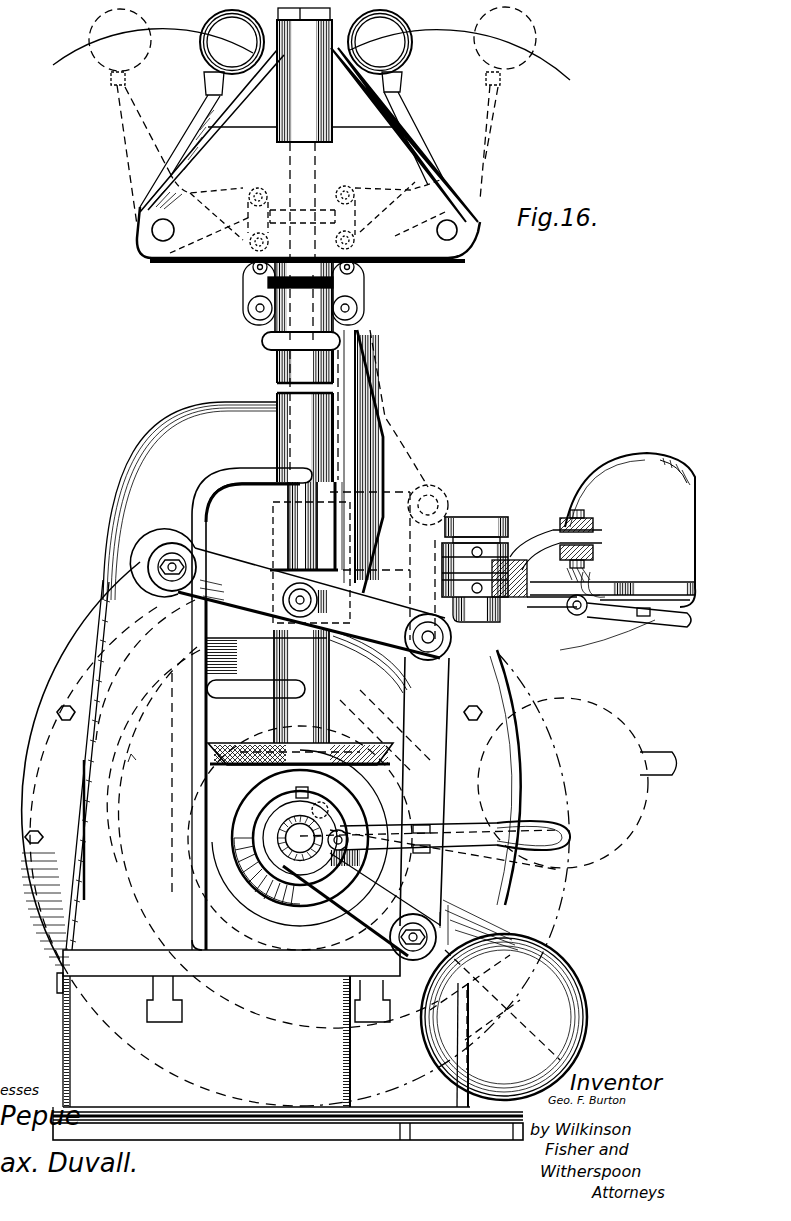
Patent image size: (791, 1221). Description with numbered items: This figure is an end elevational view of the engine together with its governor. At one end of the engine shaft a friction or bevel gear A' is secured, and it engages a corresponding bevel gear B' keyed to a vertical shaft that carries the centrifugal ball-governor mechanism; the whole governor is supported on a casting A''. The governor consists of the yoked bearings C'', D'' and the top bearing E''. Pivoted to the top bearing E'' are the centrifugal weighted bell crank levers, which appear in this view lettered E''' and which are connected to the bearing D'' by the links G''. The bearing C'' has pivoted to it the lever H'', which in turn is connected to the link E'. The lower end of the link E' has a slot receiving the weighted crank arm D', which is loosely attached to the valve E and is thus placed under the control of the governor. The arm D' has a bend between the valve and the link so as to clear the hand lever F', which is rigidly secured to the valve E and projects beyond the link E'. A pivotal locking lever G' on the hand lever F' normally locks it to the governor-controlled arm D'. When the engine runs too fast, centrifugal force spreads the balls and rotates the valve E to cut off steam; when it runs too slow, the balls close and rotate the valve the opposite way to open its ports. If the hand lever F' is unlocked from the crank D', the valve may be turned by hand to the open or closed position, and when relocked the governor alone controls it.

The governor ball arm assembly E''' is at (311, 134).
The top bearing E'' is at (308, 227).
The links G'' is at (322, 292).
The yoked bearing D'' is at (331, 372).
The casting A'' is at (349, 718).
The lever H'' is at (290, 594).
The bevel gear B' is at (270, 623).
The yoked bearing C'' is at (389, 705).
The valve E is at (300, 838).
The pivotal locking lever G' is at (495, 732).
The weighted crank arm D' is at (489, 735).
The link E' is at (490, 613).
The lock hand lever F' is at (517, 685).
The bevel gear A' is at (320, 1025).